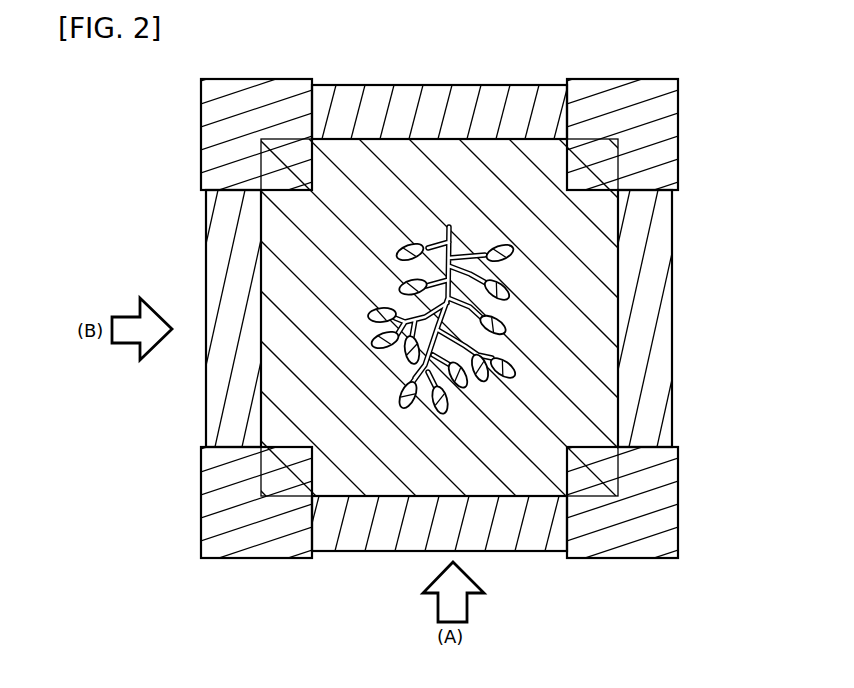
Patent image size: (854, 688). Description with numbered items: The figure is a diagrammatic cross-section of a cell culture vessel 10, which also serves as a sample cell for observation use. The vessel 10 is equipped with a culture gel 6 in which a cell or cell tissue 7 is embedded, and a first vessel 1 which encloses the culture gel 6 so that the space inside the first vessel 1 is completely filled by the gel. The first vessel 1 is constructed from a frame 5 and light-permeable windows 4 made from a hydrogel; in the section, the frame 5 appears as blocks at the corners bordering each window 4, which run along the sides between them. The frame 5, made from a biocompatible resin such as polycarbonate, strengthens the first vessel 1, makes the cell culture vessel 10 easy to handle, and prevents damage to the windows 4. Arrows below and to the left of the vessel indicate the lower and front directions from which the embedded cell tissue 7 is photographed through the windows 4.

The first vessel 1 is at (738, 178).
The light-permeable window 4 is at (442, 108).
The frame 5 is at (232, 137).
The culture gel 6 is at (575, 312).
The cell or cell tissue 7 is at (500, 363).
The cell culture vessel 10 is at (700, 67).